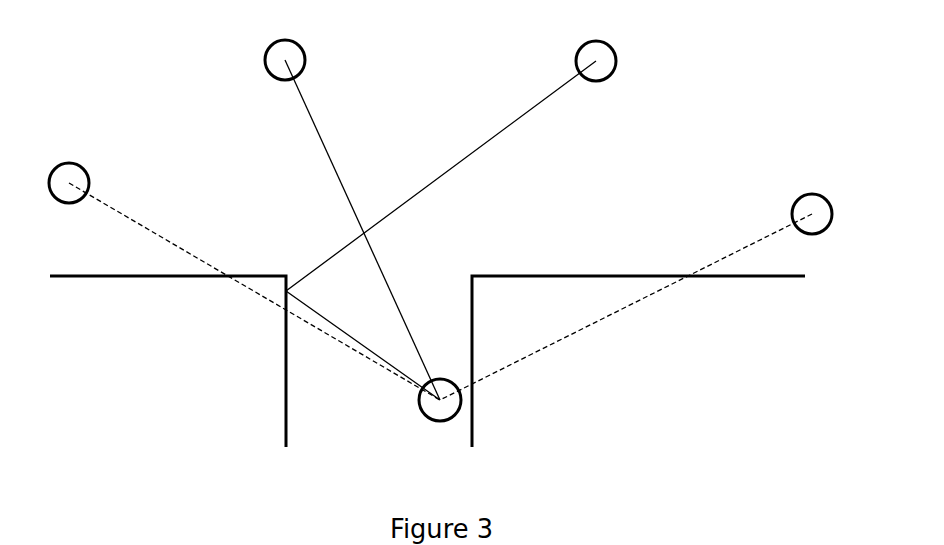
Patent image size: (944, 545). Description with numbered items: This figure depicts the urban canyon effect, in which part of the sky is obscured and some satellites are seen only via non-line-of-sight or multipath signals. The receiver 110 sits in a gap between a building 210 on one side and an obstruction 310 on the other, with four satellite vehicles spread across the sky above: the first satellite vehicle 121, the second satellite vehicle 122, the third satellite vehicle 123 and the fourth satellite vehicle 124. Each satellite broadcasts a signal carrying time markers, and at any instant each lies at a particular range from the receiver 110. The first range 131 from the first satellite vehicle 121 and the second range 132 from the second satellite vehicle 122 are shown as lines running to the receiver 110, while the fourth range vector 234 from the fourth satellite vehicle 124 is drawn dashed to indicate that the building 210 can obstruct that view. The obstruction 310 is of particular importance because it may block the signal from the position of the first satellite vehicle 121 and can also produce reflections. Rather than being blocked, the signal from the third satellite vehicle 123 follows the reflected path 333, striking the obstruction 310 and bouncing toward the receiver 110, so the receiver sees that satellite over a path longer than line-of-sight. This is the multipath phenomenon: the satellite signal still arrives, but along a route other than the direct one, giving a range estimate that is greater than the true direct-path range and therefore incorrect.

The receiver 110 is at (420, 415).
The satellite vehicle SV-1 121 is at (90, 168).
The satellite vehicle SV-2 122 is at (315, 65).
The satellite vehicle SV-3 123 is at (570, 56).
The satellite vehicle SV-4 124 is at (783, 204).
The range R1(t) 131 is at (254, 291).
The range R2(t) 132 is at (353, 230).
The path 333 is at (442, 182).
The range vector R4(t) 234 is at (626, 307).
The obstruction 310 is at (280, 398).
The building 210 is at (563, 283).